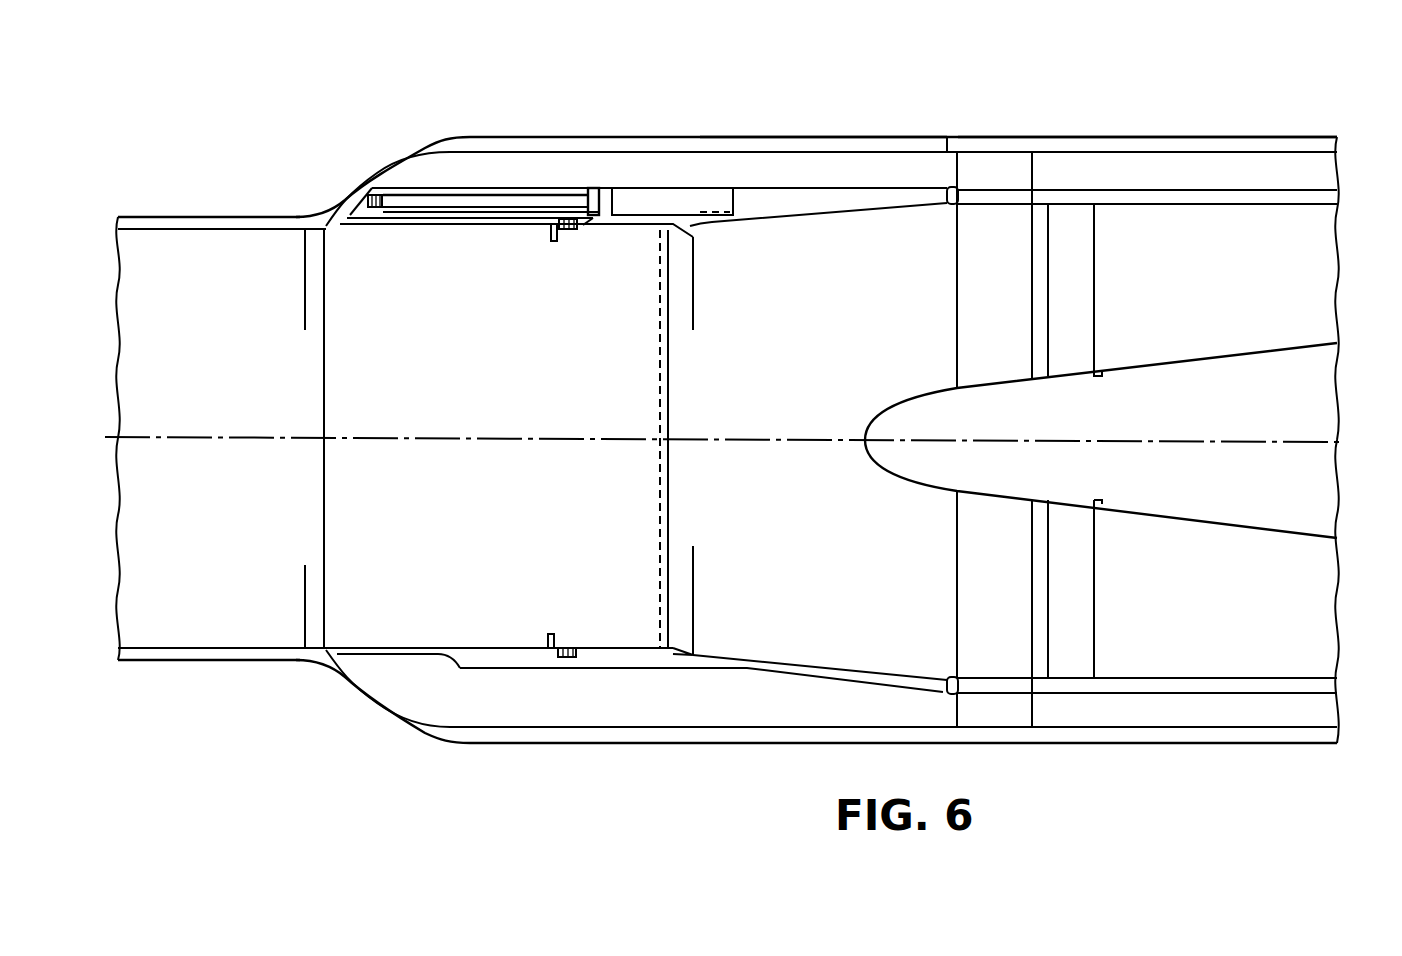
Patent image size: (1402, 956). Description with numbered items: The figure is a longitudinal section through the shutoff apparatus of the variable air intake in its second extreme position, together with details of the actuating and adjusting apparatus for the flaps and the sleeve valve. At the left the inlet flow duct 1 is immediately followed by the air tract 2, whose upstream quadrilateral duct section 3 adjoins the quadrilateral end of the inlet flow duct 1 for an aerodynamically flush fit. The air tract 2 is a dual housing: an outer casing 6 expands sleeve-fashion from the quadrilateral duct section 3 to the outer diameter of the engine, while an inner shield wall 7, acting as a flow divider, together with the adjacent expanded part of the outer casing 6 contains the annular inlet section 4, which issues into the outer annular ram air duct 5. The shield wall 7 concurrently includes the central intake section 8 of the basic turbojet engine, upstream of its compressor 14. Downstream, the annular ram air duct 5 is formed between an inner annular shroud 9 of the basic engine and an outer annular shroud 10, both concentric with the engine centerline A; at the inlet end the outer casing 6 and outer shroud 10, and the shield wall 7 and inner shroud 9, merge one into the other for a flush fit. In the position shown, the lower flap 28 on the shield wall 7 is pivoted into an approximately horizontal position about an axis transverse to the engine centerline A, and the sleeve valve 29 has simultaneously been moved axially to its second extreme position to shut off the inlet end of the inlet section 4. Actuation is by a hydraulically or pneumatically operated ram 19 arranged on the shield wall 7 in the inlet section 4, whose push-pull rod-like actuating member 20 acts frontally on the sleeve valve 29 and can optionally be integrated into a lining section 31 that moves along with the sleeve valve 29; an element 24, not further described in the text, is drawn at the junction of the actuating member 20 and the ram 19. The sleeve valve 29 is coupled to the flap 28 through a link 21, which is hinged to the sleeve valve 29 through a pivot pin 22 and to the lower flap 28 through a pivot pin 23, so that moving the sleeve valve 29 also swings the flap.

The inlet flow duct 1 is at (212, 303).
The air tract 2 is at (484, 748).
The upstream quadrilateral duct section 3 is at (498, 408).
The annular inlet section 4 is at (762, 173).
The annular ram air duct 5 is at (1190, 172).
The outer casing 6 is at (828, 142).
The inner shield wall 7 is at (874, 202).
The central intake section 8 is at (853, 353).
The inner annular shroud 9 is at (1250, 198).
The outer annular shroud 10 is at (1104, 143).
The compressor 14 is at (1213, 646).
The ram 19 is at (616, 183).
The push-pull rod-like actuating member 20 is at (524, 203).
The link 21 is at (564, 232).
The pivot pin 22 is at (580, 230).
The pivot pin 23 is at (553, 242).
The piston 24 is at (588, 187).
The lower flap 28 is at (398, 585).
The sleeve valve 29 is at (398, 232).
The lining section 31 is at (427, 190).
The engine centerline A is at (1188, 442).